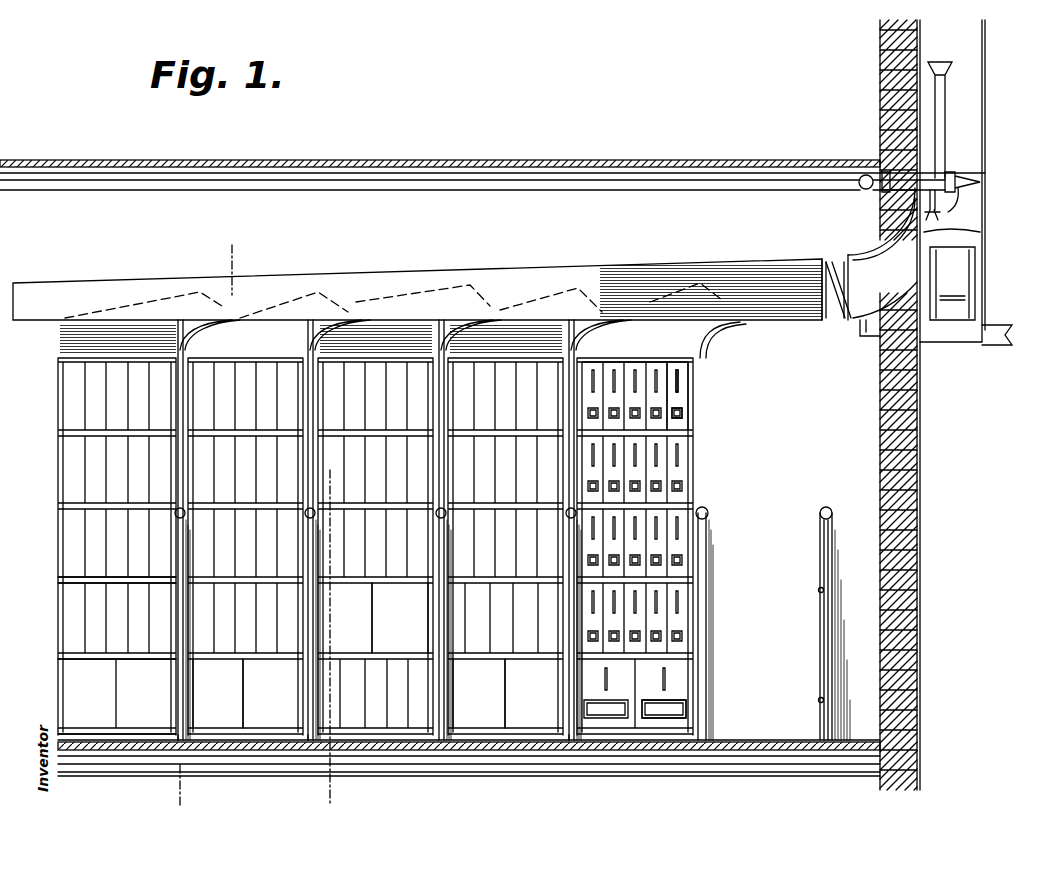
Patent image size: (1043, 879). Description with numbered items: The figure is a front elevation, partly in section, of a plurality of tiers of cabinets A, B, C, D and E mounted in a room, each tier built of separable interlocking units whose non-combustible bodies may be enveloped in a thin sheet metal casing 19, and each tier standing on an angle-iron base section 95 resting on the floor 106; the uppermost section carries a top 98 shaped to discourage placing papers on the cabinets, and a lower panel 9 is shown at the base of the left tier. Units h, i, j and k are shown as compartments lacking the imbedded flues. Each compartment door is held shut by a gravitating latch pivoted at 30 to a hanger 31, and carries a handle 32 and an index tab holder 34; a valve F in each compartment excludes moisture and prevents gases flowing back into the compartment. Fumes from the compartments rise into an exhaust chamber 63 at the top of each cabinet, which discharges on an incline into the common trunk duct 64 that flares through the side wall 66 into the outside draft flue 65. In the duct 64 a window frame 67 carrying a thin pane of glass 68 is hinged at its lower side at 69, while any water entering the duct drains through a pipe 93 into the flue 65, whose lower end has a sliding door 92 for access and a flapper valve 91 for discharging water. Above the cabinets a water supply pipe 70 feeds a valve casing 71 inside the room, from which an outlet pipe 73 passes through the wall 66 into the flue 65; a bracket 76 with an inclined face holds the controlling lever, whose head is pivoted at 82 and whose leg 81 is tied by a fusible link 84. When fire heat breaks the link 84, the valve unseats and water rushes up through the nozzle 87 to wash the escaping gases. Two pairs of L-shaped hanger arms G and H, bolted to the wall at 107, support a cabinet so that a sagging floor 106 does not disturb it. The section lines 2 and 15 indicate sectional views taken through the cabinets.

The water supply pipe 70 is at (455, 172).
The duct 64 is at (356, 285).
The top 98 is at (410, 338).
The pane of glass 68 is at (855, 262).
The window frame 67 is at (826, 266).
The hinge 69 is at (856, 316).
The drain pipe 93 is at (862, 336).
The side wall 66 is at (918, 450).
The flue 65 is at (957, 345).
The flapper valve 91 is at (1000, 320).
The sliding door 92 is at (958, 268).
The fusible link 84 is at (952, 221).
The pivot 30 is at (1000, 340).
The nozzle 87 is at (935, 92).
The outlet pipe 73 is at (885, 176).
The valve casing 71 is at (860, 178).
The bracket 76 is at (960, 176).
The leg 81 is at (972, 192).
The pivot 82 is at (928, 196).
The floor 106 is at (400, 760).
The exhaust chamber 63 is at (272, 335).
The tier of cabinets A is at (96, 372).
The tier of cabinets B is at (244, 365).
The tier of cabinets C is at (382, 362).
The tier of cabinets D is at (492, 372).
The tier of cabinets E is at (610, 365).
The hanger 31 is at (606, 362).
The valve F is at (678, 392).
The handle 32 is at (680, 396).
The index tab holder 34 is at (682, 415).
The unit k is at (664, 682).
The L-shaped hanger arm G is at (708, 608).
The L-shaped hanger arm H is at (834, 590).
The bolt 107 is at (820, 512).
The sheet metal casing 19 is at (60, 612).
The base panel 9 is at (68, 676).
The unit h is at (218, 693).
The unit i is at (400, 618).
The unit j is at (479, 693).
The base section 95 is at (290, 735).
The section line 2 is at (240, 264).
The section line 15 is at (332, 489).